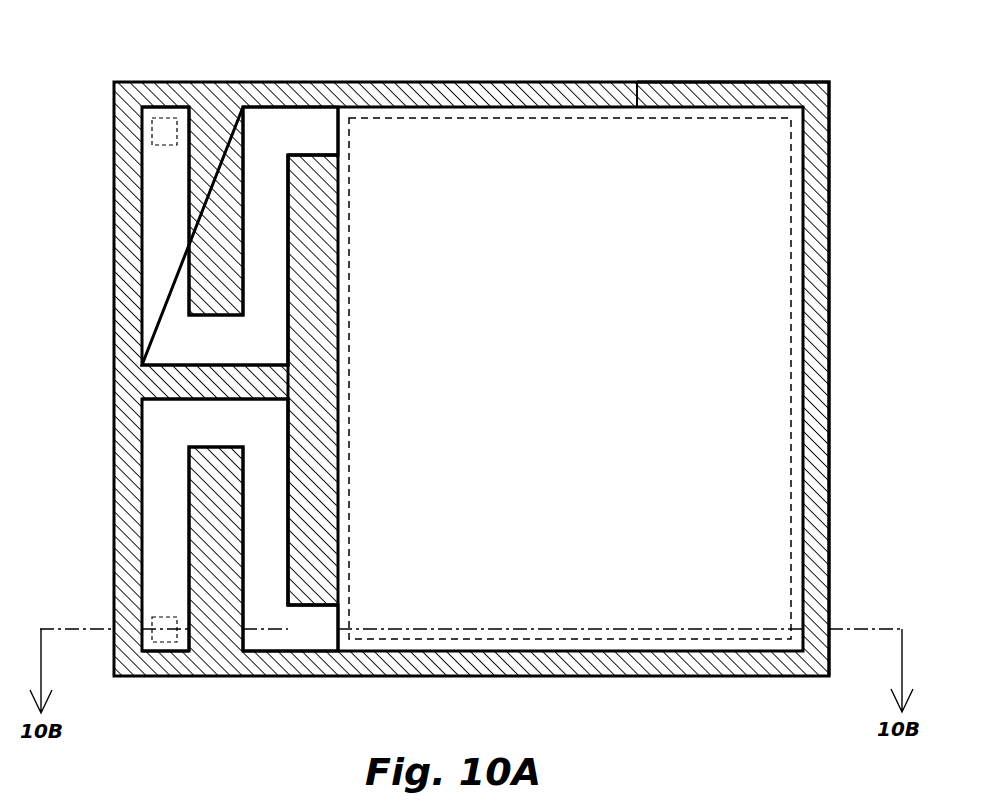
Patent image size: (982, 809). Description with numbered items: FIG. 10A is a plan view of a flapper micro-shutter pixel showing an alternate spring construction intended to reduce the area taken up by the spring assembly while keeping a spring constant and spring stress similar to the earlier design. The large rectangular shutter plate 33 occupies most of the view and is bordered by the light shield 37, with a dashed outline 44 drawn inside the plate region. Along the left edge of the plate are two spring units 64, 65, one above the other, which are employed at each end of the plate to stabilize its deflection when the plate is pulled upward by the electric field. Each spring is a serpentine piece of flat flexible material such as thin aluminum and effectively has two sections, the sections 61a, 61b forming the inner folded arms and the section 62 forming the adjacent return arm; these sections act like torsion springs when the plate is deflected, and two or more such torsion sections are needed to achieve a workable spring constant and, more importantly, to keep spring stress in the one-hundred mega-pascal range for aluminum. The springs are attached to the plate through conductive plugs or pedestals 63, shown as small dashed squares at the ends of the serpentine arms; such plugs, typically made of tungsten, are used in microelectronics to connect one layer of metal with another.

The shutter plate 33 is at (636, 82).
The light shield 37 is at (812, 82).
The shutter plate region (dashed outline) 44 is at (388, 120).
The upper flexure slot 61a is at (170, 235).
The lower flexure slot 61b is at (167, 520).
The spring section 62 is at (262, 243).
The conductive plugs or pedestals 63 is at (167, 118).
The spring unit 64 is at (100, 112).
The spring unit 65 is at (103, 403).